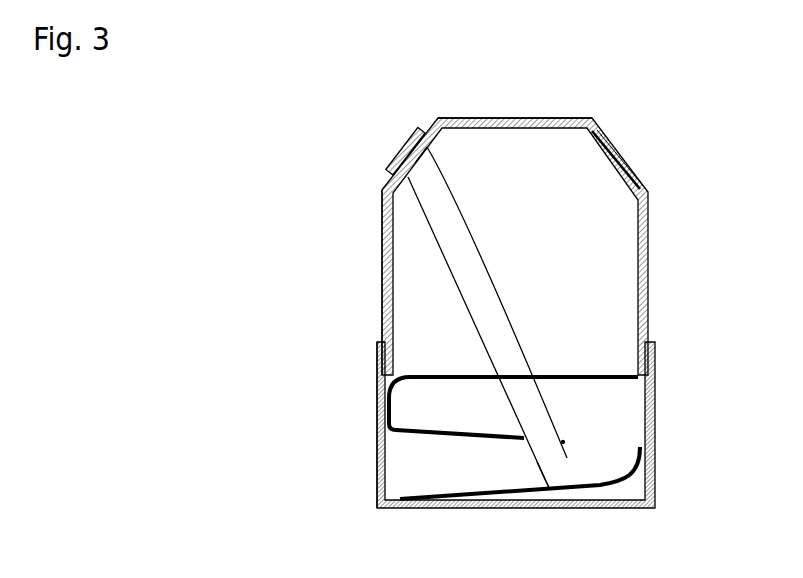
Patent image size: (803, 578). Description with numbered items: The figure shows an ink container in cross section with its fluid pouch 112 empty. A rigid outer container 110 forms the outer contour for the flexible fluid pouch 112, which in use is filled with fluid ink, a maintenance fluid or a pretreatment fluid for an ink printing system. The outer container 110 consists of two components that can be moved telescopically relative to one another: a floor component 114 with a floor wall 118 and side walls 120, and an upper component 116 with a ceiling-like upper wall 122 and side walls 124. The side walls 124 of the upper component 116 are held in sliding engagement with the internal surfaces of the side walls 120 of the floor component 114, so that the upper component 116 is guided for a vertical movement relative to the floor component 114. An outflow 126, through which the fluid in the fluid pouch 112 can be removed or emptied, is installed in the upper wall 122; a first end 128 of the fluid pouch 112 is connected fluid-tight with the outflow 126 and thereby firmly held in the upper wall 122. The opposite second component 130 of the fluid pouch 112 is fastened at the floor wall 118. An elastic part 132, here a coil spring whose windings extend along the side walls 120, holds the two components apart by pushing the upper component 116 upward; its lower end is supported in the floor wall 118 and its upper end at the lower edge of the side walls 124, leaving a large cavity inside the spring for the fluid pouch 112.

The outer container 110 is at (663, 313).
The fluid pouch 112 is at (492, 264).
The floor component 114 is at (655, 433).
The upper component 116 is at (623, 158).
The floor wall 118 is at (556, 497).
The side walls 120 is at (376, 421).
The upper wall 122 is at (513, 117).
The side walls 124 is at (384, 208).
The outflow 126 is at (384, 165).
The first end 128 is at (417, 160).
The second component 130 is at (565, 495).
The elastic part 132 is at (463, 437).